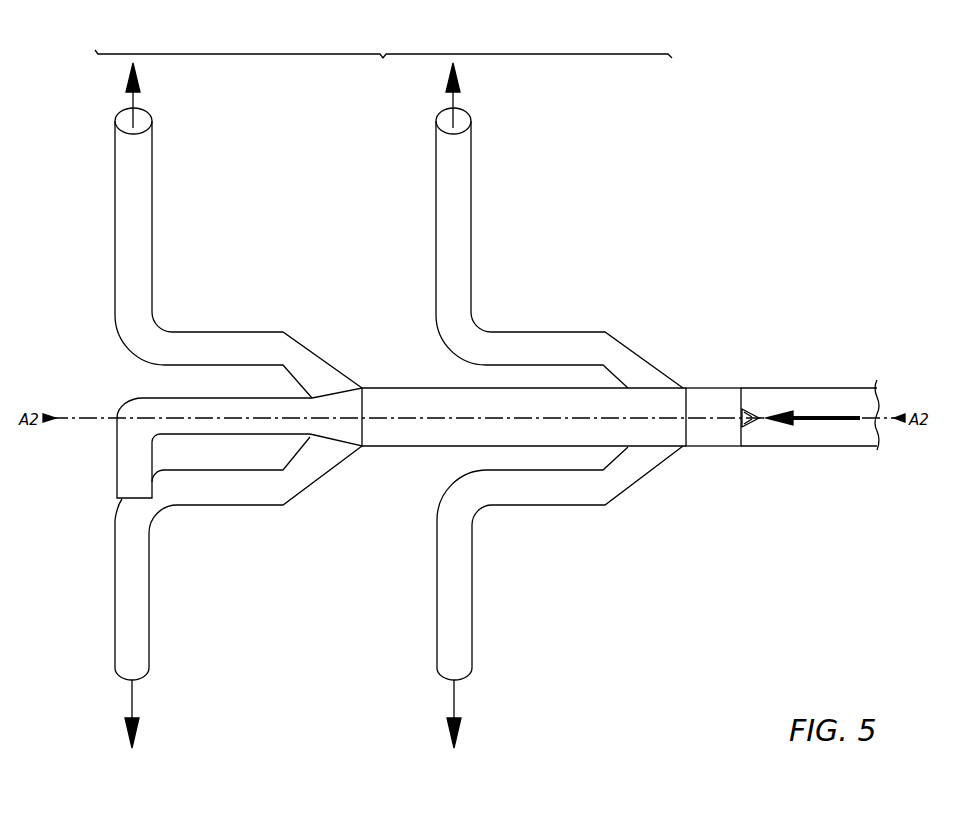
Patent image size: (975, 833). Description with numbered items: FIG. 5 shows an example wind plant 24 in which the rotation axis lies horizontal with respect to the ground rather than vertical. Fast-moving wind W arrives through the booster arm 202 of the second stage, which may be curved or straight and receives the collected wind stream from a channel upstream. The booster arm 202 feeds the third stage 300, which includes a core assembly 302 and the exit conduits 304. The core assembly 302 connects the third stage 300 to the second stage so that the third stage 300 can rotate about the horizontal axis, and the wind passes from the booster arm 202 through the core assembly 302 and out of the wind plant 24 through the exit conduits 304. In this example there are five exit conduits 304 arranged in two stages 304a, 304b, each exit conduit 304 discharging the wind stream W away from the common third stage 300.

The wind plant 24 is at (736, 209).
The booster arm 202 is at (786, 350).
The third stage 300 is at (721, 354).
The core assembly 302 is at (715, 450).
The exit conduit 304 is at (389, 388).
The first stage of exit conduits 304a is at (538, 240).
The second stage of exit conduits 304b is at (218, 240).